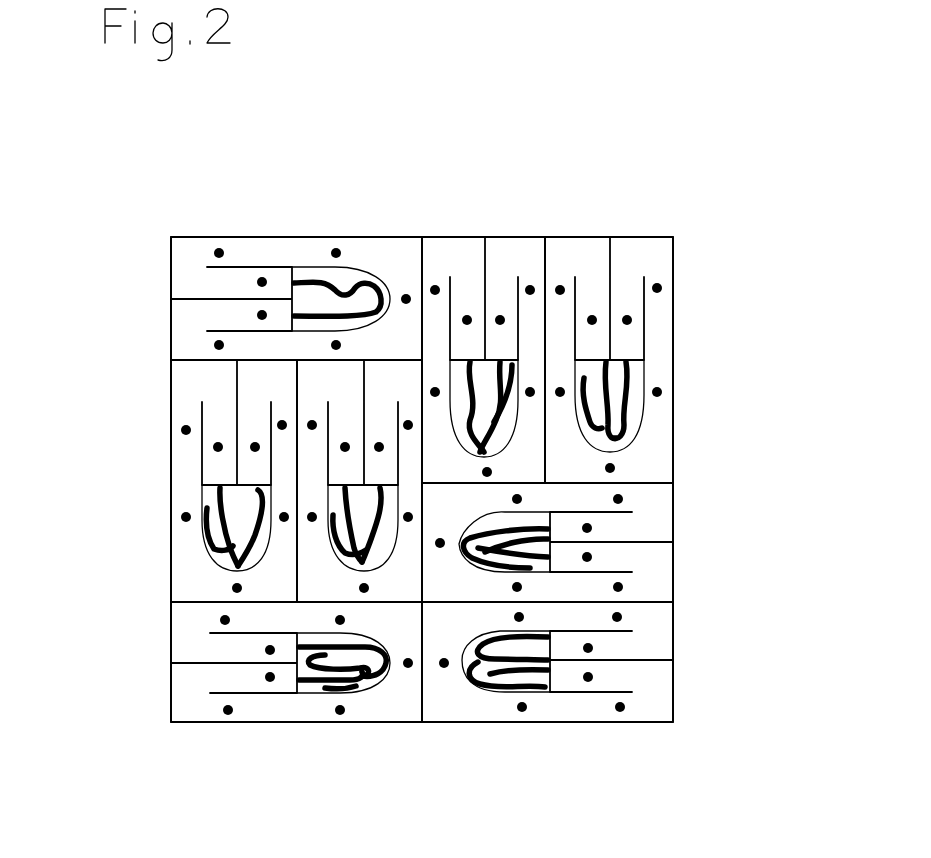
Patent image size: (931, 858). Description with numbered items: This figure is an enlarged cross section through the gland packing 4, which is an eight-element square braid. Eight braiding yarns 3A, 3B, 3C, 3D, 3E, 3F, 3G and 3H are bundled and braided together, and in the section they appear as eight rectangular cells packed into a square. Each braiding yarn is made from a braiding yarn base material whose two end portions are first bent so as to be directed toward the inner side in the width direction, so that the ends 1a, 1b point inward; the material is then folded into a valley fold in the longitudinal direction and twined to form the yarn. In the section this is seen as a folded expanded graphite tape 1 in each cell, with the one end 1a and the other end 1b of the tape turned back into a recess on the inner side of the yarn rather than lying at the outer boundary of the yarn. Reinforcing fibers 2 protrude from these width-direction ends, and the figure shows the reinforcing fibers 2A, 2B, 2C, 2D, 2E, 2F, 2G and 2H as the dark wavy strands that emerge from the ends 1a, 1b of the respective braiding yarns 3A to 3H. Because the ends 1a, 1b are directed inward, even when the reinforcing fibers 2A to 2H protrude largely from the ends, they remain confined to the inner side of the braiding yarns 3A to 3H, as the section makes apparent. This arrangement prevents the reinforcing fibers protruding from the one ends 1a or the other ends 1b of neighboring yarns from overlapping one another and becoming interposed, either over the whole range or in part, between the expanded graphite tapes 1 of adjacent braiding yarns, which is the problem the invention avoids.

The expanded graphite tape 1 is at (660, 442).
The one end 1a is at (295, 362).
The other end 1b is at (304, 262).
The reinforcing fiber 2 is at (220, 248).
The reinforcing fiber 2A is at (610, 358).
The reinforcing fiber 2B is at (490, 450).
The reinforcing fiber 2C is at (470, 552).
The reinforcing fiber 2D is at (510, 686).
The reinforcing fiber 2E is at (376, 270).
The reinforcing fiber 2F is at (217, 557).
The reinforcing fiber 2G is at (347, 562).
The reinforcing fiber 2H is at (363, 687).
The braiding yarn 3A is at (634, 247).
The braiding yarn 3B is at (468, 252).
The braiding yarn 3C is at (820, 566).
The braiding yarn 3D is at (820, 706).
The braiding yarn 3E is at (170, 263).
The braiding yarn 3F is at (180, 395).
The braiding yarn 3G is at (308, 455).
The braiding yarn 3H is at (182, 702).
The gland packing 4 is at (413, 235).